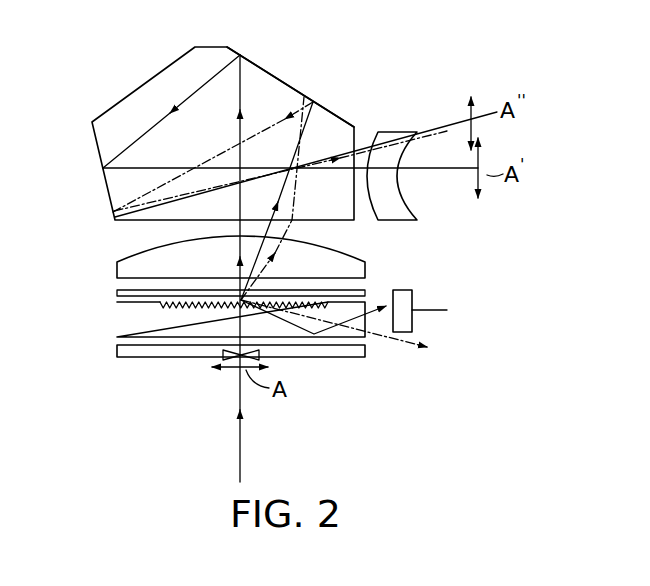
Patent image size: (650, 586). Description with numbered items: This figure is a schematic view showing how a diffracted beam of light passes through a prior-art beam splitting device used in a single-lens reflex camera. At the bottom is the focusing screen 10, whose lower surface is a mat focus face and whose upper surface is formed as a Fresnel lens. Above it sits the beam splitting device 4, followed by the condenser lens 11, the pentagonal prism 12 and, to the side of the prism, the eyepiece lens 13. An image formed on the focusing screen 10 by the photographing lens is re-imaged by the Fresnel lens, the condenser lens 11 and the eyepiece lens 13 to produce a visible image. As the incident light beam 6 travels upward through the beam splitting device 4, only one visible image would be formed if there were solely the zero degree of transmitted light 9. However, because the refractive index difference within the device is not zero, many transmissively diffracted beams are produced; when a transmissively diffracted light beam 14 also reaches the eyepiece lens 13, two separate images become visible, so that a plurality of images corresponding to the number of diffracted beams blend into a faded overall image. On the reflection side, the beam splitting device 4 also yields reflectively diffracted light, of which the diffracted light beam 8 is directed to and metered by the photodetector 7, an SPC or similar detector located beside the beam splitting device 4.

The zero degree of transmitted light 9 is at (226, 65).
The pentagonal prism 12 is at (290, 84).
The transmissively diffracted light beam 14 is at (328, 158).
The eyepiece lens 13 is at (400, 132).
The condenser lens 11 is at (117, 268).
The beam splitting device 4 is at (117, 315).
The focusing screen 10 is at (117, 350).
The diffracted light beam 8 is at (372, 311).
The photodetector 7 is at (412, 293).
The incident light beam 6 is at (240, 430).